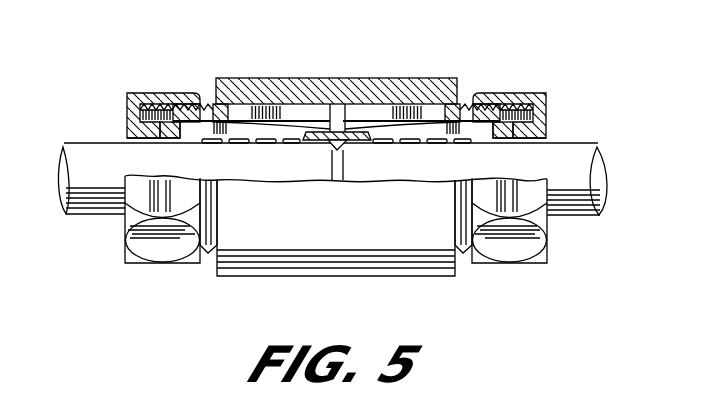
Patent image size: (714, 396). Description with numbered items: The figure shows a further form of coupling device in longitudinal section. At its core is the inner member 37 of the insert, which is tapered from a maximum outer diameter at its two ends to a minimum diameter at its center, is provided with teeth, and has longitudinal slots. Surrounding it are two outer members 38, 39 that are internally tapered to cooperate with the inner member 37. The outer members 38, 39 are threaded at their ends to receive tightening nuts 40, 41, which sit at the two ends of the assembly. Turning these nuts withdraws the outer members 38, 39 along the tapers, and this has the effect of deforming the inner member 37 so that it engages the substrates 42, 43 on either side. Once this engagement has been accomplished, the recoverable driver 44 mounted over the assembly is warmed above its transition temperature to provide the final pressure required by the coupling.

The inner member 37 is at (208, 103).
The outer member 38 is at (262, 112).
The outer member 39 is at (393, 117).
The tightening nut 40 is at (127, 113).
The tightening nut 41 is at (546, 122).
The substrate 42 is at (92, 203).
The substrate 43 is at (592, 218).
The recoverable driver 44 is at (329, 78).